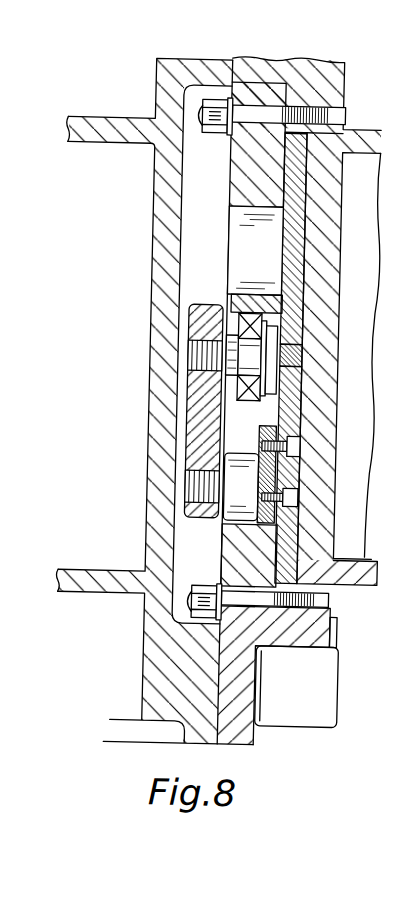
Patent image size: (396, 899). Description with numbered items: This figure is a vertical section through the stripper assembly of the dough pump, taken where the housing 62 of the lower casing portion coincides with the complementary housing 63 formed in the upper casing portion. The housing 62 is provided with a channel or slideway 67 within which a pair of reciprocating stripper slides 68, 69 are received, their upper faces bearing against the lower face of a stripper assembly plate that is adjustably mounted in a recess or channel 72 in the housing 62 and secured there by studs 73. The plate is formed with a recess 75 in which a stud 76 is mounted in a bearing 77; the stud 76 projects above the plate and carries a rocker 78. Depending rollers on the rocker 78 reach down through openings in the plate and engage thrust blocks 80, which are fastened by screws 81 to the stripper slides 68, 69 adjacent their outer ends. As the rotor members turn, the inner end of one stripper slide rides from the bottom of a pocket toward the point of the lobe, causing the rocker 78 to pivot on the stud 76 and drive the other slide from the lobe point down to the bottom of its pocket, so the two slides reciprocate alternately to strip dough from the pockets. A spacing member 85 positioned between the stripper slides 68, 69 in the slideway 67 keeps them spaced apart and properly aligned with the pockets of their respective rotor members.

The housing 62 is at (335, 653).
The complementary housing 63 is at (148, 632).
The channel or slideway 67 is at (296, 524).
The stripper slide 68 is at (290, 469).
The stripper slide 69 is at (296, 232).
The recess or channel 72 is at (273, 624).
The studs 73 is at (252, 117).
The recess 75 is at (266, 327).
The stud 76 is at (246, 357).
The bearing 77 is at (259, 424).
The rocker 78 is at (184, 438).
The thrust blocks 80 is at (277, 425).
The screws 81 is at (298, 445).
The spacing member 85 is at (294, 357).